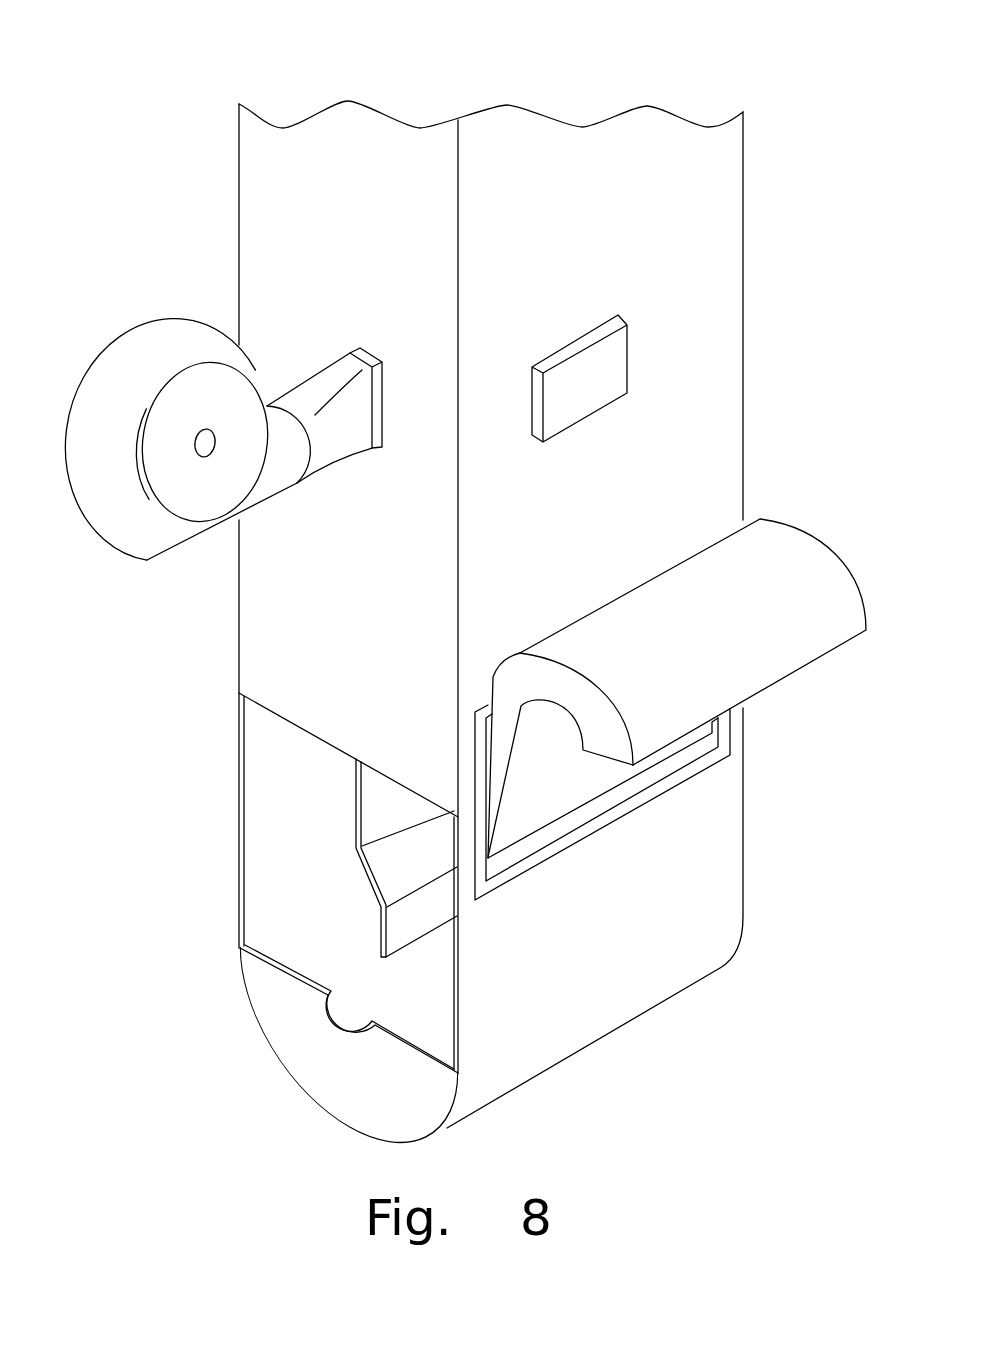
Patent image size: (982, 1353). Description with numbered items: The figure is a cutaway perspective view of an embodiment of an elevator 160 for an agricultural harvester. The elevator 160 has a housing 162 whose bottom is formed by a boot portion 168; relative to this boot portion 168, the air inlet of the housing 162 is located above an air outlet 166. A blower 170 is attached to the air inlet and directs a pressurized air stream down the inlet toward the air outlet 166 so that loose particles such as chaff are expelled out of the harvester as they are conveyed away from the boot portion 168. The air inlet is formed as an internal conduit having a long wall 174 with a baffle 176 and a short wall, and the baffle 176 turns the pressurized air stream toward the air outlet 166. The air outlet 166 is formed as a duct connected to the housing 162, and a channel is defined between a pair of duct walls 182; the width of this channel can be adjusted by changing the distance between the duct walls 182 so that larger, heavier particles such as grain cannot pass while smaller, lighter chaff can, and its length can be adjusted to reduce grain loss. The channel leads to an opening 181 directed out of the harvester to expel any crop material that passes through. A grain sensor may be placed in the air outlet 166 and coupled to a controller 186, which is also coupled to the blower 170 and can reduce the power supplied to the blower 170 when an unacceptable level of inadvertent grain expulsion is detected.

The elevator 160 is at (786, 216).
The housing 162 is at (724, 304).
The air outlet 166 is at (679, 695).
The boot portion 168 is at (330, 1092).
The blower 170 is at (135, 352).
The long wall 174 is at (355, 795).
The baffle 176 is at (398, 865).
The opening 181 is at (772, 688).
The duct walls 182 is at (578, 632).
The controller 186 is at (585, 345).